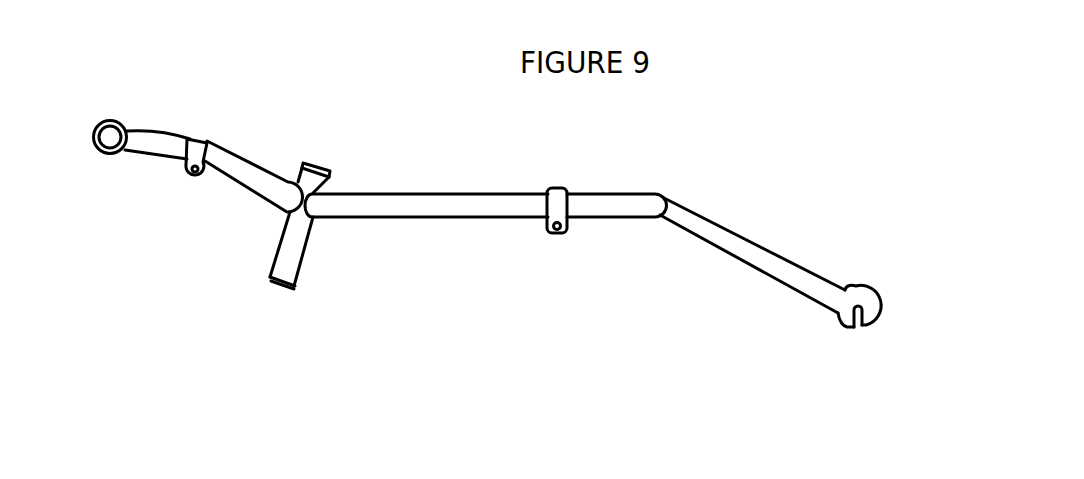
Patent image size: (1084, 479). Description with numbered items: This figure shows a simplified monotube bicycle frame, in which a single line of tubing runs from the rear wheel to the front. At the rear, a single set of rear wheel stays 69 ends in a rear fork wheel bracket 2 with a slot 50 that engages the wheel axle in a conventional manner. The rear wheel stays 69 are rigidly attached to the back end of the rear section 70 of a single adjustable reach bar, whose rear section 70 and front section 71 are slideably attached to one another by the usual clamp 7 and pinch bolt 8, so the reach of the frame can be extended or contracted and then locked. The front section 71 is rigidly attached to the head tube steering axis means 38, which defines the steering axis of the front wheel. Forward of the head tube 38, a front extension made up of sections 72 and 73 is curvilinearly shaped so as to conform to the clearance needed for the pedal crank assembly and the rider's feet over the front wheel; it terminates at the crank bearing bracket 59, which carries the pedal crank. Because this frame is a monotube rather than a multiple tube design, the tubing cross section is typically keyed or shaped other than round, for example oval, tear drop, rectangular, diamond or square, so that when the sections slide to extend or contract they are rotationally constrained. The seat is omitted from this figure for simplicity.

The rear fork wheel bracket 2 is at (870, 302).
The clamp 7 is at (204, 140).
The pinch bolt 8 is at (195, 178).
The head tube steering axis means 38 is at (303, 243).
The slot 50 is at (852, 327).
The crank bearing bracket 59 is at (103, 155).
The rear wheel stay 69 is at (748, 240).
The rear section of adjustable reach bar 70 is at (613, 203).
The front section of adjustable reach bar 71 is at (415, 207).
The front extension section 72 is at (262, 175).
The front extension section 73 is at (150, 137).